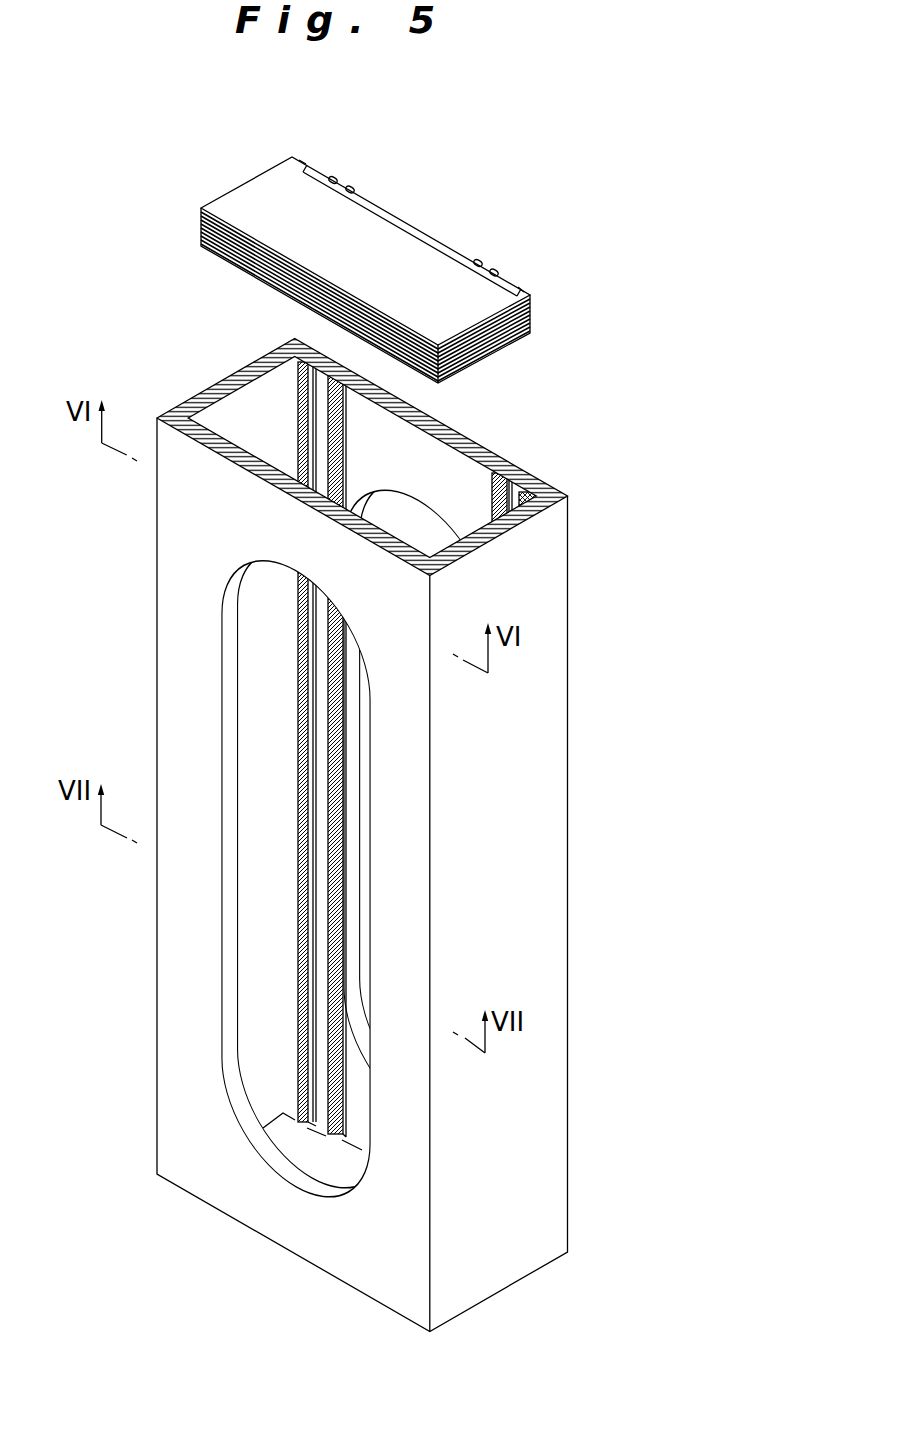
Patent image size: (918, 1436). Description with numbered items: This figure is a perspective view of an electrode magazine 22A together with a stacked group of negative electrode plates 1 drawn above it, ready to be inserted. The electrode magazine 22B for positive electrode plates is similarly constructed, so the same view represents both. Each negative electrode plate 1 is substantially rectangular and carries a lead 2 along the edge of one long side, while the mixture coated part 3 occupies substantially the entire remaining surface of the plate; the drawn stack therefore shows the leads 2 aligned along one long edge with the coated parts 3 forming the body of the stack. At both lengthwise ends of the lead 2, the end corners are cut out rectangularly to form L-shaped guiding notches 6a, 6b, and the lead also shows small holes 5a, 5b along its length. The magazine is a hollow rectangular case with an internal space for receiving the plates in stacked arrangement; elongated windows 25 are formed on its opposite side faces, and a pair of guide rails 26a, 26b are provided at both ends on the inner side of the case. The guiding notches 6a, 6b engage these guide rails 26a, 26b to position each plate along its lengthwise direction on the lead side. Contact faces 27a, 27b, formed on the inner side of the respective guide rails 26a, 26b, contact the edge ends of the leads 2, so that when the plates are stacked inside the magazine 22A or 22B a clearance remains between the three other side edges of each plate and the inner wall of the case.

The negative electrode plate 1 is at (378, 240).
The lead 2 is at (415, 223).
The mixture coated part 3 is at (268, 215).
The through holes 5a is at (355, 187).
The through holes 5b is at (497, 269).
The guiding notch 6a is at (303, 162).
The guiding notch 6b is at (528, 290).
The electrode magazine 22A is at (185, 650).
The electrode magazine 22B is at (289, 804).
The elongated window 25 is at (257, 628).
The guide rail 26a is at (300, 378).
The guide rail 26b is at (522, 500).
The contact face 27a is at (328, 422).
The contact face 27b is at (500, 493).